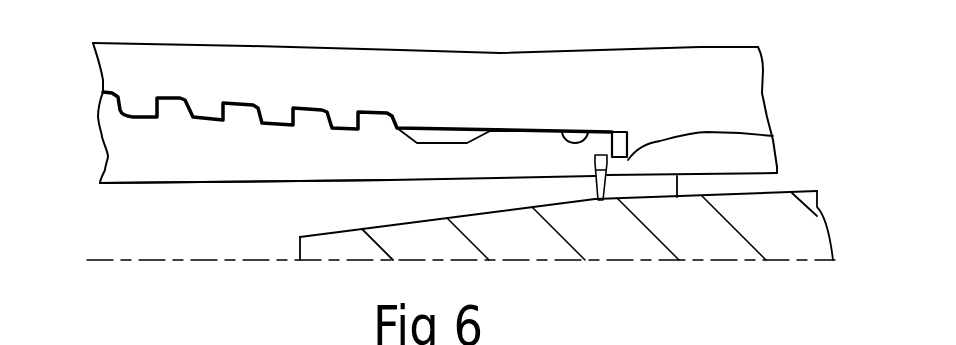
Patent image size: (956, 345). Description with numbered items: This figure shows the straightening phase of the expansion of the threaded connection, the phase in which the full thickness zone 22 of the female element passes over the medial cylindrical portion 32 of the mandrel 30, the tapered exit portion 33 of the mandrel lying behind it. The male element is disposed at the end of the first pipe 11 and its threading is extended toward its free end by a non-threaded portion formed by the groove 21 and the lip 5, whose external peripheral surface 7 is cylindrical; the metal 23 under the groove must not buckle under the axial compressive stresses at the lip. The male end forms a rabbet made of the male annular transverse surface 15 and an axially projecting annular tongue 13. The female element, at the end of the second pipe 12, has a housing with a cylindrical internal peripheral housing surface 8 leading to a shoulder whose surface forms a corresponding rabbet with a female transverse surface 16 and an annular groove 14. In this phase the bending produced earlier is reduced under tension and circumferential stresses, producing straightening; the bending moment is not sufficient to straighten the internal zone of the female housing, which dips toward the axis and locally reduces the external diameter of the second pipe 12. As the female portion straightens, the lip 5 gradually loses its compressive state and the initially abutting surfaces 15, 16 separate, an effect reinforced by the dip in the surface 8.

The lip 5 is at (518, 155).
The external peripheral surface 7 is at (527, 128).
The internal peripheral housing surface 8 is at (592, 128).
The first pipe 11 is at (127, 143).
The second pipe 12 is at (708, 89).
The annular tongue 13 is at (611, 131).
The annular groove 14 is at (773, 136).
The male annular transverse surface 15 is at (590, 197).
The female transverse surface 16 is at (606, 199).
The groove 21 is at (438, 138).
The full thickness zone 22 is at (677, 150).
The metal under the groove 23 is at (208, 143).
The mandrel 30 is at (653, 259).
The medial cylindrical portion 32 is at (793, 192).
The tapered exit portion 33 is at (405, 226).